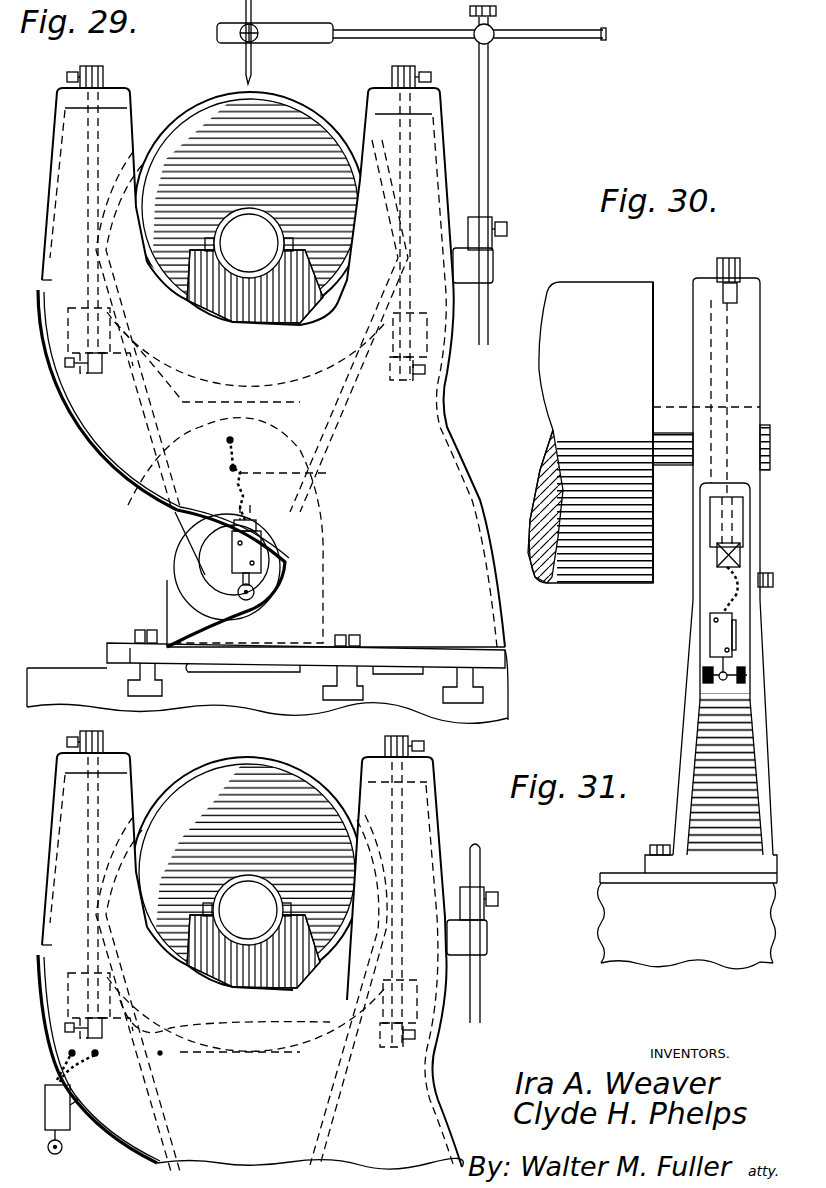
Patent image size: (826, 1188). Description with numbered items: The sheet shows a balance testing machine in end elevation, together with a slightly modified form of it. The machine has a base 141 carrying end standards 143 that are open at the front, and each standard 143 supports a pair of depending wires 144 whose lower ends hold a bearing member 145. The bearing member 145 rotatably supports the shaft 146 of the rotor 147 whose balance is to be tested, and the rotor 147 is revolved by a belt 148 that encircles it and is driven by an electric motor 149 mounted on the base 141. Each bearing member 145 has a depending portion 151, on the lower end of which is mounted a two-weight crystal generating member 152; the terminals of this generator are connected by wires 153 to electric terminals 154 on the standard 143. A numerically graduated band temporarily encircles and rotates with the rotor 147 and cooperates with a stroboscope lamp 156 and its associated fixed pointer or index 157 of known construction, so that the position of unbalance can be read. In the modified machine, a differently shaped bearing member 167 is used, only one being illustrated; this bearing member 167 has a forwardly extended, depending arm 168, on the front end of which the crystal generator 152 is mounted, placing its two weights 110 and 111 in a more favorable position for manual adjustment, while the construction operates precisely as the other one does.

In FIG. 30, the weight 110 is at (703, 673).
In FIG. 29, the weight 111 is at (254, 592).
In FIG. 30, the weight 111 is at (737, 700).
In FIG. 29, the base 141 is at (78, 683).
In FIG. 30, the base 141 is at (620, 887).
In FIG. 29, the end standard 143 is at (100, 430).
In FIG. 30, the end standard 143 is at (747, 697).
In FIG. 31, the end standard 143 is at (410, 1062).
In FIG. 29, the depending wire 144 is at (92, 130).
In FIG. 31, the depending wire 144 is at (244, 889).
In FIG. 29, the bearing member 145 is at (203, 254).
In FIG. 30, the bearing member 145 is at (717, 523).
In FIG. 31, the bearing member 145 is at (253, 945).
In FIG. 29, the shaft 146 is at (255, 229).
In FIG. 30, the shaft 146 is at (673, 410).
In FIG. 31, the shaft 146 is at (236, 885).
In FIG. 29, the rotor 147 is at (222, 124).
In FIG. 30, the rotor 147 is at (568, 290).
In FIG. 31, the rotor 147 is at (247, 872).
In FIG. 29, the belt 148 is at (337, 443).
In FIG. 31, the belt 148 is at (323, 1116).
In FIG. 29, the electric motor 149 is at (176, 568).
In FIG. 29, the depending portion 151 is at (98, 525).
In FIG. 29, the crystal generating member 152 is at (258, 550).
In FIG. 30, the crystal generating member 152 is at (727, 640).
In FIG. 31, the crystal generating member 152 is at (60, 1117).
In FIG. 29, the wire 153 is at (262, 473).
In FIG. 29, the electric terminal 154 is at (233, 438).
In FIG. 29, the stroboscope lamp 156 is at (278, 42).
In FIG. 29, the fixed pointer or index 157 is at (243, 57).
In FIG. 30, the bearing member 167 is at (717, 593).
In FIG. 31, the bearing member 167 is at (197, 917).
In FIG. 31, the depending arm 168 is at (160, 1053).